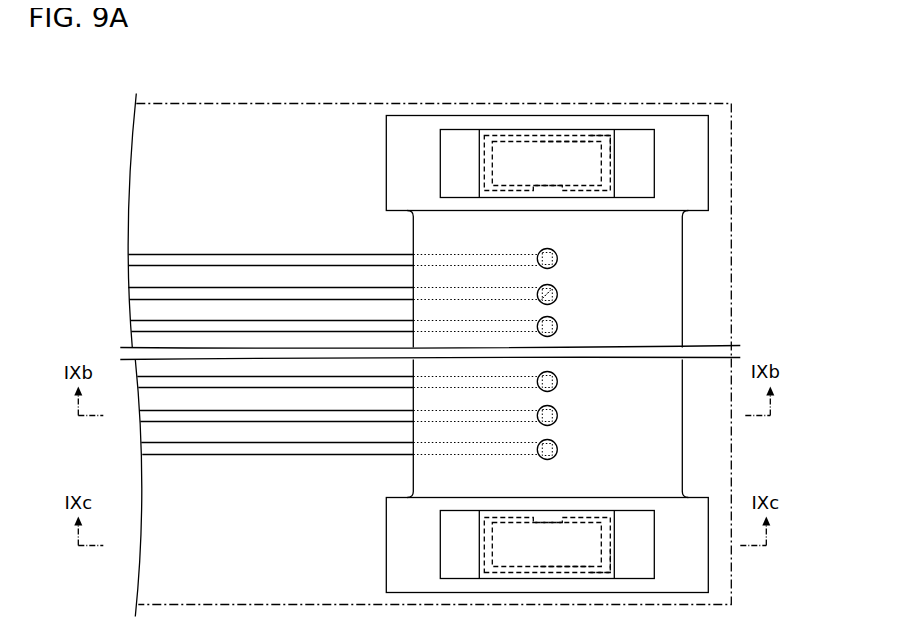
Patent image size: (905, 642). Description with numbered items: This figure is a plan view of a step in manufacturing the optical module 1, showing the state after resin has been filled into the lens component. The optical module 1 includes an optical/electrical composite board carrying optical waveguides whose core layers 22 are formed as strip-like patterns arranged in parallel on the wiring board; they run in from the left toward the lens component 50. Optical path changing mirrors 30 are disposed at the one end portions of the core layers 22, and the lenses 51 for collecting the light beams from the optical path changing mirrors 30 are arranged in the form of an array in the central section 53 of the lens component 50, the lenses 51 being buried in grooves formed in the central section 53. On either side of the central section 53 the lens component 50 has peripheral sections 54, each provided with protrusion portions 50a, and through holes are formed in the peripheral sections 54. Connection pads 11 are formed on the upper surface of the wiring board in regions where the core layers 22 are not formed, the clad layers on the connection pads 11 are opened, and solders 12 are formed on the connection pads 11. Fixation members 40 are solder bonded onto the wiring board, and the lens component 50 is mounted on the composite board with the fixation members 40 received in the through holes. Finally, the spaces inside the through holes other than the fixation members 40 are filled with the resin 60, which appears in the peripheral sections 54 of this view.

The optical module 1 is at (274, 86).
The connection pad 11 is at (566, 140).
The solder 12 is at (608, 140).
The core layer 22 is at (226, 256).
The optical path changing mirror 30 is at (559, 262).
The fixation member 40 is at (552, 150).
The lens component 50 is at (586, 354).
The protrusion portion 50a is at (460, 140).
The lens 51 is at (556, 293).
The central section 53 is at (683, 278).
The peripheral section 54 is at (709, 160).
The resin 60 is at (524, 131).